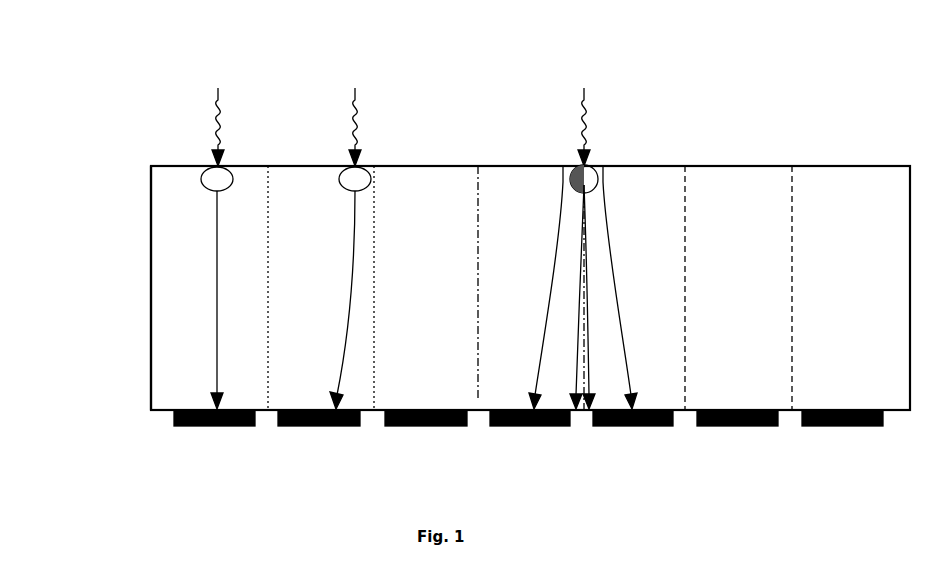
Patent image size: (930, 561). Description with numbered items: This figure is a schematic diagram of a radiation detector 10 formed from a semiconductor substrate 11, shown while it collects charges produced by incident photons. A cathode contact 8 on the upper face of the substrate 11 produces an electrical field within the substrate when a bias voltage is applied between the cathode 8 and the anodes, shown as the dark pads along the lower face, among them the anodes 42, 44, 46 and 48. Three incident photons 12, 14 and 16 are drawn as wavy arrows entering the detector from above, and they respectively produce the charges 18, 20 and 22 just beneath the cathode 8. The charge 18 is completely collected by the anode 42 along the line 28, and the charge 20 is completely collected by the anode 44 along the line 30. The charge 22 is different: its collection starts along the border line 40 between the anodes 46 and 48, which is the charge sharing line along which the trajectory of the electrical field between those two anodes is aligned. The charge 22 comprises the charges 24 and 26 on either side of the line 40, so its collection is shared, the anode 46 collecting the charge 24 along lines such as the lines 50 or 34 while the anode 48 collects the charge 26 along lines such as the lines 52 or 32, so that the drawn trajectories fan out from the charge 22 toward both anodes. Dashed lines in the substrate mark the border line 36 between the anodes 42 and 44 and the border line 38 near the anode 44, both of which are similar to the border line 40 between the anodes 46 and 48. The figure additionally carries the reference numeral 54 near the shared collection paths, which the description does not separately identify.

The cathode contact 8 is at (745, 167).
The detector 10 is at (832, 183).
The semiconductor substrate 11 is at (150, 304).
The incident photon 12 is at (217, 92).
The incident photon 14 is at (354, 92).
The incident photon 16 is at (584, 92).
The charge 18 is at (204, 173).
The charge 20 is at (342, 175).
The charge 22 is at (570, 180).
The charge 24 is at (566, 184).
The charge 26 is at (600, 181).
The line 28 is at (214, 331).
The line 30 is at (346, 323).
The line 32 is at (548, 330).
The line 34 is at (615, 306).
The border line 36 is at (268, 213).
The border line 38 is at (376, 202).
The border line 40 is at (586, 423).
The anode 42 is at (207, 426).
The anode 44 is at (334, 426).
The anode 46 is at (529, 426).
The anode 48 is at (648, 427).
The line 50 is at (590, 392).
The line 52 is at (577, 383).
The charge path 54 is at (578, 412).